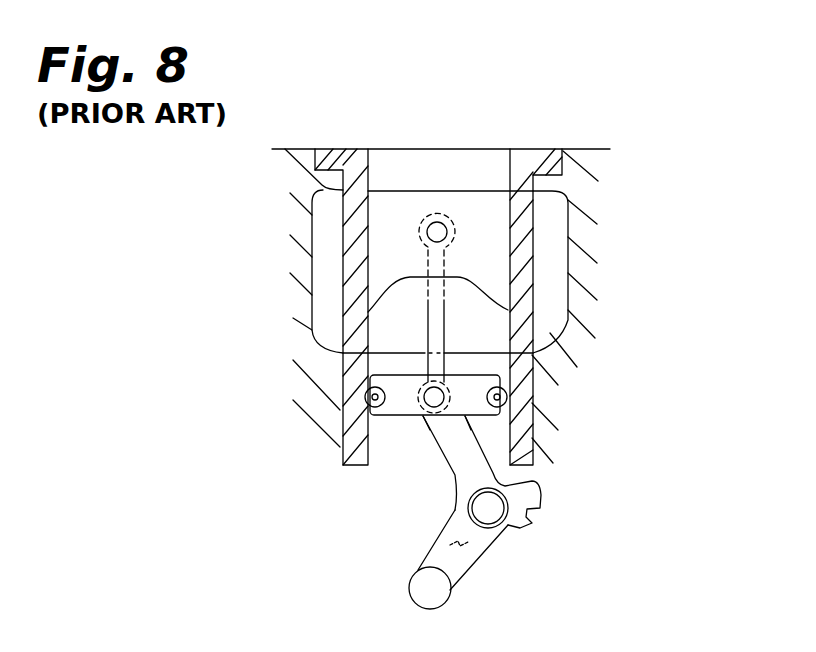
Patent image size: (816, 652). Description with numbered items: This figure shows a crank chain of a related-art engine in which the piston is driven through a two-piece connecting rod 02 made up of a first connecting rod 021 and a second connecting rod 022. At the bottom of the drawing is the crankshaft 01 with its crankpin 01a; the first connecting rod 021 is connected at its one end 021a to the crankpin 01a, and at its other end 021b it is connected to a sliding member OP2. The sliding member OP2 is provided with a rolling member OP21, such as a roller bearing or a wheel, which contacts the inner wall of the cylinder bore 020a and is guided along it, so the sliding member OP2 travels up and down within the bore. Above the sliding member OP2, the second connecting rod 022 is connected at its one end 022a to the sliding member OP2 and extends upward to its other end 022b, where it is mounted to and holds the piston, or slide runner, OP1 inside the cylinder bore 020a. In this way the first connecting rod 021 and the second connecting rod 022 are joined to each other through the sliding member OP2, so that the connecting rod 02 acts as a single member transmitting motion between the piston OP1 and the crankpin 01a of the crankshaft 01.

The cylinder bore 020a is at (510, 168).
The piston (slide runner) OP1 is at (483, 228).
The other end of second connecting rod 022b is at (442, 250).
The second connecting rod 022 is at (437, 303).
The one end of second connecting rod 022a is at (452, 385).
The sliding member OP2 is at (468, 390).
The rolling member OP21 is at (500, 412).
The two-piece connecting rod 02 is at (427, 333).
The other end of first connecting rod 021b is at (428, 422).
The first connecting rod 021 is at (455, 470).
The one end of first connecting rod 021a is at (455, 510).
The crankpin 01a is at (493, 513).
The crankshaft 01 is at (437, 590).